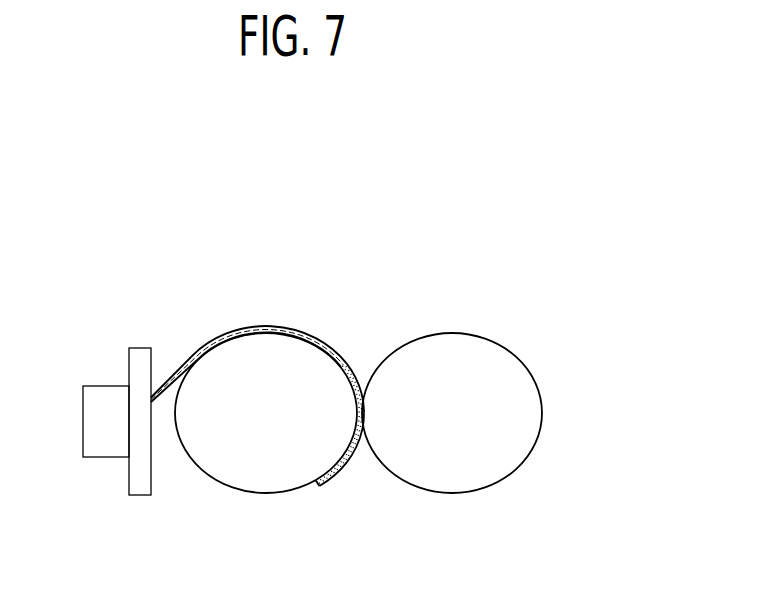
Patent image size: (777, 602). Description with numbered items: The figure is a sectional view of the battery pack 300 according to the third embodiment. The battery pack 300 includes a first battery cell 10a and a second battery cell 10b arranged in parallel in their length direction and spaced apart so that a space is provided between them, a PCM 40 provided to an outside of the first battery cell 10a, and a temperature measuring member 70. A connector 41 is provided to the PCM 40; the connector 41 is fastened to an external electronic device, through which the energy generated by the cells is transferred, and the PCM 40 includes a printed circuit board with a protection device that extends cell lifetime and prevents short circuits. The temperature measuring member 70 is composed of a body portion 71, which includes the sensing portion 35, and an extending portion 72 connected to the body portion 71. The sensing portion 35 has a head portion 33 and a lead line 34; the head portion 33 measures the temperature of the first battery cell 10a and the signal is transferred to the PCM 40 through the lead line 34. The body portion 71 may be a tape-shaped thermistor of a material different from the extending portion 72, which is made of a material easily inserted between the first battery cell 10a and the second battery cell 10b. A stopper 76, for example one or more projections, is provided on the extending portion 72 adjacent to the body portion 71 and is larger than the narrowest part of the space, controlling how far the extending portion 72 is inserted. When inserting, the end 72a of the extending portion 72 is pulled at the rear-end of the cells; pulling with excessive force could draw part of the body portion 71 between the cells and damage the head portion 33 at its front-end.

The battery pack 300 is at (547, 240).
The PCM 40 is at (138, 347).
The connector 41 is at (93, 386).
The sensing portion 35 is at (248, 305).
The lead line 34 is at (273, 327).
The head portion 33 is at (345, 362).
The body portion 71 is at (316, 332).
The temperature measuring member 70 is at (390, 277).
The first battery cell 10a is at (258, 477).
The second battery cell 10b is at (463, 480).
The stopper 76 is at (361, 390).
The extending portion 72 is at (340, 478).
The end of extending portion 72a is at (309, 483).